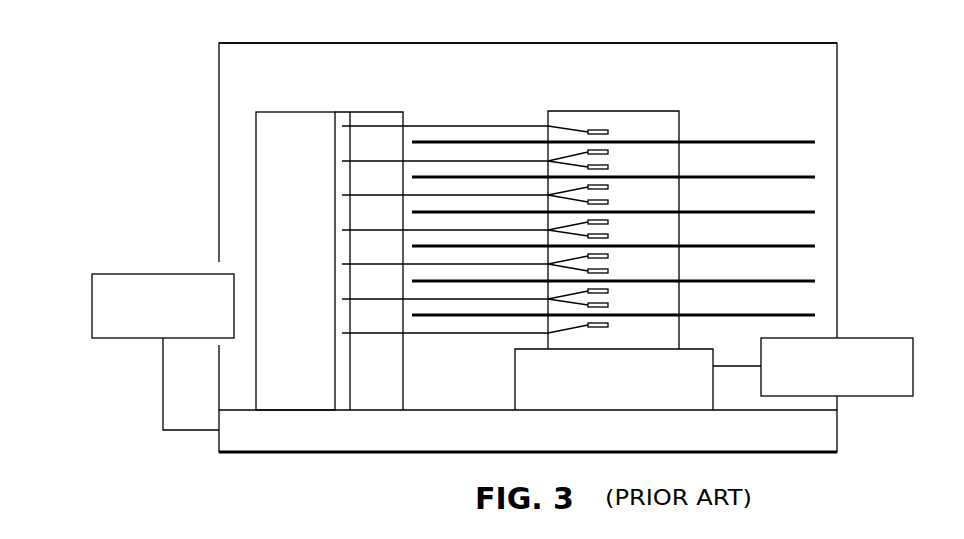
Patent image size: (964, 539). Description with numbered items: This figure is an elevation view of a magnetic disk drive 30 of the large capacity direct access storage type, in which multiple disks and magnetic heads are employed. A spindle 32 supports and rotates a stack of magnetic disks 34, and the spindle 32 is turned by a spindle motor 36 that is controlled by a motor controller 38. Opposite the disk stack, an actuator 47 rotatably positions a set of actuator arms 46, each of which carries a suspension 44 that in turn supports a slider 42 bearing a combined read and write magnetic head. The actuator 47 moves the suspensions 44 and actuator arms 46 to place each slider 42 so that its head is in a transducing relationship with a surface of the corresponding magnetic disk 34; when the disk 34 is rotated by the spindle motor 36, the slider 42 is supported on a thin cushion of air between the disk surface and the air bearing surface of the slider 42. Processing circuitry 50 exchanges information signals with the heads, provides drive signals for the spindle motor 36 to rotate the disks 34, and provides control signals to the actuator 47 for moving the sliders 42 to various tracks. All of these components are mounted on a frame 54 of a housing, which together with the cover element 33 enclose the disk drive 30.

The magnetic disk drive 30 is at (727, 115).
The spindle 32 is at (668, 111).
The cover 33 is at (540, 43).
The magnetic disk 34 is at (815, 143).
The spindle motor 36 is at (627, 389).
The motor controller 38 is at (873, 397).
The slider 42 is at (608, 152).
The suspension 44 is at (552, 161).
The actuator arm 46 is at (519, 160).
The actuator 47 is at (285, 112).
The processing circuitry 50 is at (138, 272).
The frame 54 is at (272, 448).